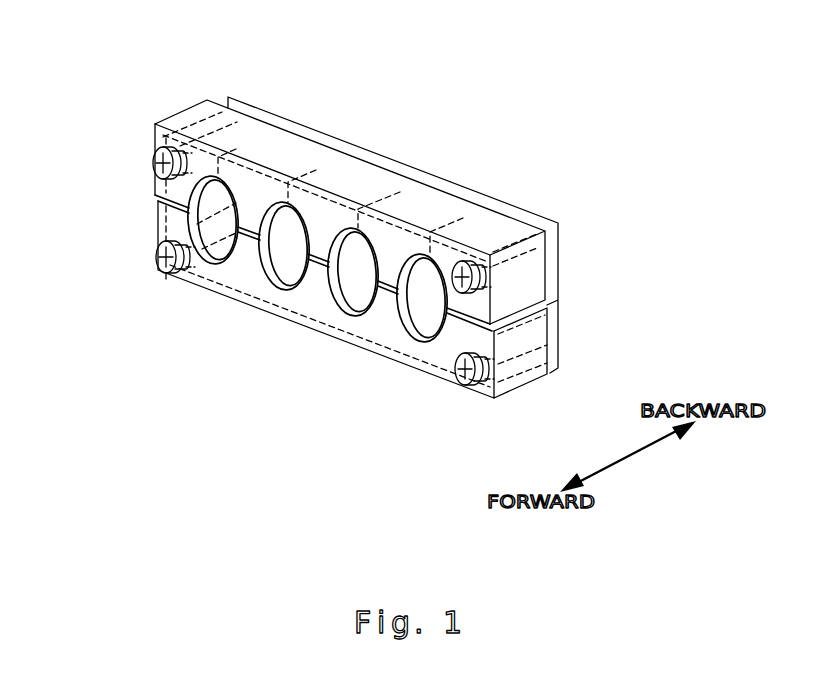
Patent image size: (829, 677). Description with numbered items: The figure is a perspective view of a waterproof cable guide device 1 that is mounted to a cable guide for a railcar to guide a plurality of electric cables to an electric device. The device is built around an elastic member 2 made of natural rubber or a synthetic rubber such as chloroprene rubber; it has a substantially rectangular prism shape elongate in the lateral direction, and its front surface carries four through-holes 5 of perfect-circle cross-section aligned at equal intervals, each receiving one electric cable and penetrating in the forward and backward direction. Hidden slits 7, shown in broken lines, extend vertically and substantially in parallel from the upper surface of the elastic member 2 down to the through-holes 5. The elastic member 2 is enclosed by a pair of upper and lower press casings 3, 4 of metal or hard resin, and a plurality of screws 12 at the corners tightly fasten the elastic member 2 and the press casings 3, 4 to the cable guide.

The waterproof cable guide device 1 is at (365, 222).
The elastic member 2 is at (560, 257).
The upper press casing 3 is at (181, 110).
The lower press casing 4 is at (182, 280).
The through-holes 5 is at (222, 263).
The slits 7 is at (236, 149).
The screws 12 is at (156, 256).